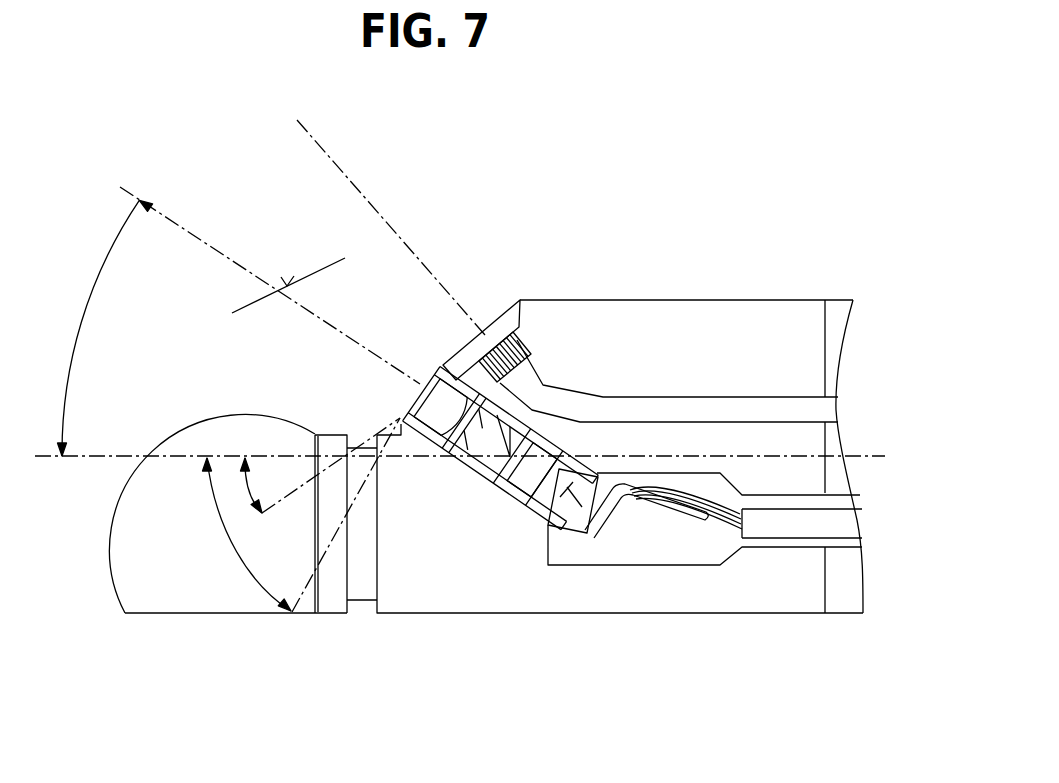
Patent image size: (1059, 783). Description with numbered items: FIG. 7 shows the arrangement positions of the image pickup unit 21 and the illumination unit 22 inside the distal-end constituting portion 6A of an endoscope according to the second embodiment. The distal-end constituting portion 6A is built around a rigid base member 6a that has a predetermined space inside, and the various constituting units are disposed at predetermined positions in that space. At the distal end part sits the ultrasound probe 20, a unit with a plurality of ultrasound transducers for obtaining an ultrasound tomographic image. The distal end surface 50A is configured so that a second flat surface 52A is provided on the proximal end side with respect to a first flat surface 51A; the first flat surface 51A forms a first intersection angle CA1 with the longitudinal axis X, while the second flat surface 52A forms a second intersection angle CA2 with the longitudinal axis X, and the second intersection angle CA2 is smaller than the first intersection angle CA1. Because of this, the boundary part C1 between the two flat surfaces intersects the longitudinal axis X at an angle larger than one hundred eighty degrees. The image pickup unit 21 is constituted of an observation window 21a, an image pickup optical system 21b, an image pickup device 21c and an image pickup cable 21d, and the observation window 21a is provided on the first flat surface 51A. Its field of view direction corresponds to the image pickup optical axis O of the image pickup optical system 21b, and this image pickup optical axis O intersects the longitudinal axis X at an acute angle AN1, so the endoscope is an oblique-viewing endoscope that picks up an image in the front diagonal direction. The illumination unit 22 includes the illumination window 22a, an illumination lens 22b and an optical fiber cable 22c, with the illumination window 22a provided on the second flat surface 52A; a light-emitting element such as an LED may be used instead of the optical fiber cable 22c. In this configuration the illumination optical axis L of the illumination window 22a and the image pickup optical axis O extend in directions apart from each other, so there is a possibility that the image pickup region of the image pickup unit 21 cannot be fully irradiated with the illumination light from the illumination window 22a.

The ultrasound probe 20 is at (206, 432).
The image pickup unit 21 is at (570, 548).
The observation window 21a is at (423, 405).
The image pickup optical system 21b is at (486, 440).
The image pickup device 21c is at (523, 462).
The image pickup cable 21d is at (770, 523).
The illumination unit 22 is at (640, 302).
The illumination window 22a is at (524, 300).
The illumination lens 22b is at (528, 353).
The optical fiber cable 22c is at (617, 410).
The distal-end constituting portion 6A is at (465, 243).
The base member 6a is at (778, 303).
The distal end surface 50A is at (288, 280).
The first flat surface 51A is at (400, 420).
The second flat surface 52A is at (453, 350).
The boundary part C1 is at (456, 344).
The illumination optical axis L is at (330, 157).
The image pickup optical axis O is at (167, 218).
The longitudinal axis X is at (118, 455).
The acute angle AN1 is at (104, 272).
The first intersection angle CA1 is at (241, 558).
The second intersection angle CA2 is at (247, 490).